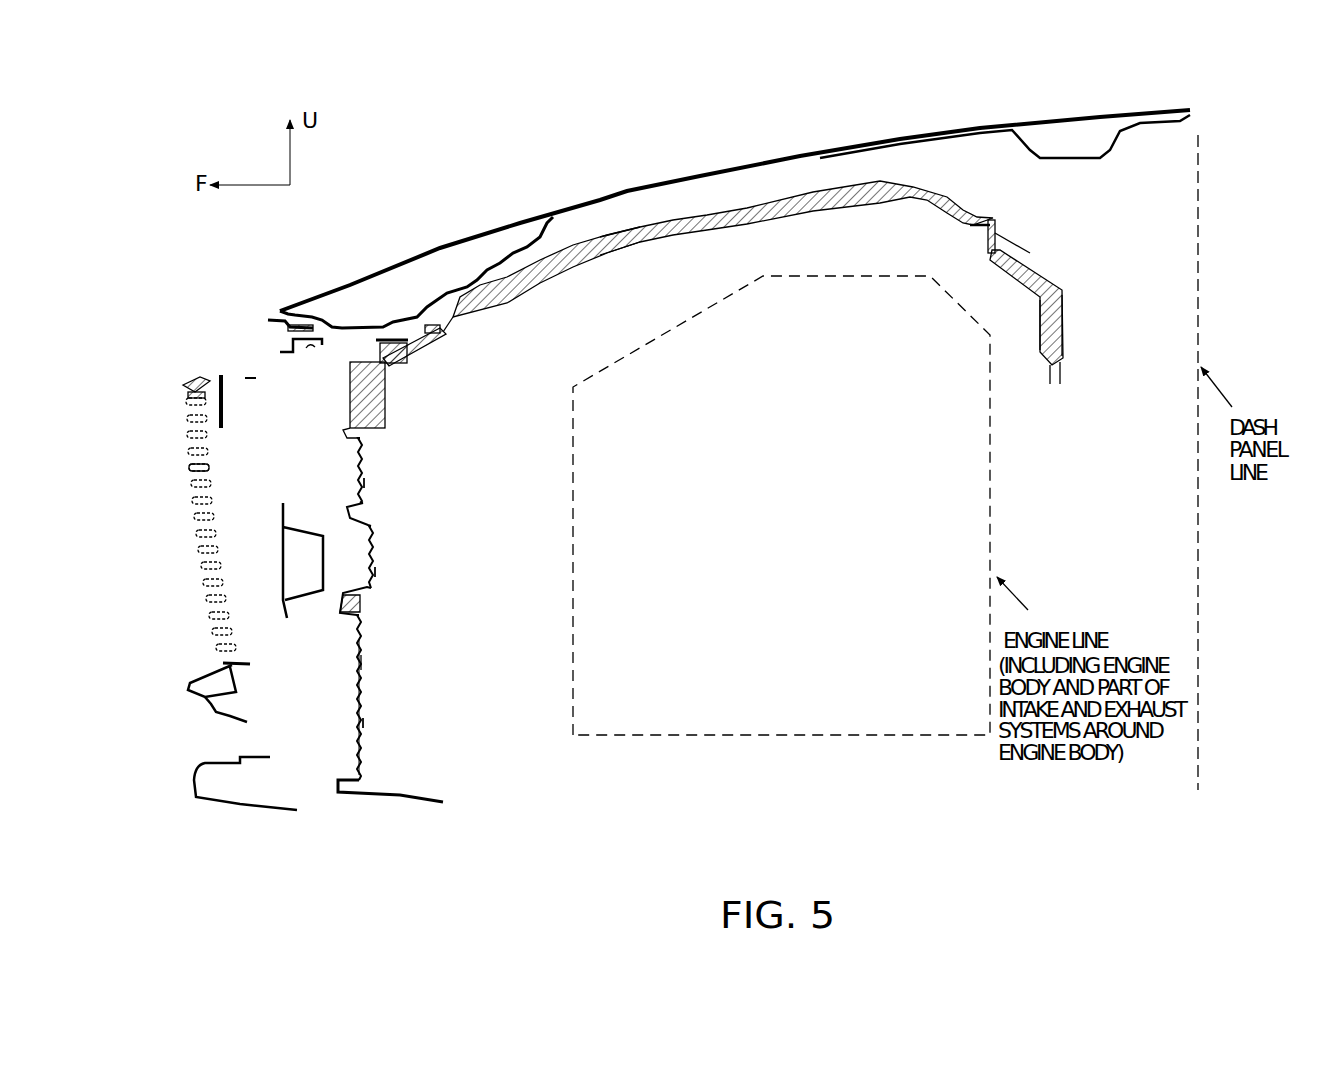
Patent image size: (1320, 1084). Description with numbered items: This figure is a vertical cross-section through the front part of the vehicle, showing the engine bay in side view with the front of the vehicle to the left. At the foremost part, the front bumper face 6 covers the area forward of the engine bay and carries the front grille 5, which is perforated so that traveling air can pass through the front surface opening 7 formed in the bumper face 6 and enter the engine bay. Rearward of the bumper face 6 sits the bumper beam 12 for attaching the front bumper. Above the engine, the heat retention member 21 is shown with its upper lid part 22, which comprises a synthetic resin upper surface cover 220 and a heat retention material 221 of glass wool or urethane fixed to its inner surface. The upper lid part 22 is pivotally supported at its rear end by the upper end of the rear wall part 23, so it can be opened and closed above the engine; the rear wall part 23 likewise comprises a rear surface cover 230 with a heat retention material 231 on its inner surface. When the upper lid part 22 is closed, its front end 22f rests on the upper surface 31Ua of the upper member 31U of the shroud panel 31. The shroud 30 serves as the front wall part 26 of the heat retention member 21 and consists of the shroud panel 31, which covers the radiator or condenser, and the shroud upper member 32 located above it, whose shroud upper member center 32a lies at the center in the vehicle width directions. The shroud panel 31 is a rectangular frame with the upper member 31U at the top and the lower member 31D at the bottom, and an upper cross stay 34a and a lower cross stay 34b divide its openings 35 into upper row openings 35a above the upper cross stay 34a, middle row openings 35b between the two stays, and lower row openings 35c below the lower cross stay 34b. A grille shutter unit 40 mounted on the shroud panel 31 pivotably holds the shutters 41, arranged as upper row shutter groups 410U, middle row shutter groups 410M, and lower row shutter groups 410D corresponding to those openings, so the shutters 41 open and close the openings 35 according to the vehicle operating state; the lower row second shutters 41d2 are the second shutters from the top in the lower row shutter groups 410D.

The front grille 5 is at (206, 470).
The front bumper face 6 is at (192, 380).
The front surface opening 7 is at (182, 446).
The bumper beam 12 is at (277, 530).
The heat retention member 21 is at (737, 180).
The upper lid part 22 is at (718, 235).
The front end of upper lid part 22f is at (425, 343).
The upper surface cover 220 is at (627, 230).
The heat retention material 221 is at (628, 250).
The rear wall part 23 is at (1059, 300).
The rear surface cover 230 is at (1066, 312).
The heat retention material 231 is at (1040, 320).
The front wall part 26 is at (420, 560).
The shroud 30 is at (508, 537).
The shroud panel 31 is at (420, 560).
The upper member 31U is at (385, 395).
The upper surface of upper member 31Ua is at (433, 330).
The lower member 31D is at (342, 792).
The shroud upper member 32 is at (300, 372).
The shroud upper member center 32a is at (327, 352).
The upper cross stay 34a is at (367, 518).
The lower cross stay 34b is at (372, 605).
The openings 35 is at (369, 603).
The upper row openings 35a is at (375, 483).
The middle row openings 35b is at (388, 572).
The lower row openings 35c is at (398, 723).
The grille shutter unit 40 is at (398, 604).
The upper row shutter groups 410U is at (372, 452).
The middle row shutter groups 410M is at (378, 543).
The lower row shutter groups 410D is at (395, 694).
The grille shutters 41 is at (412, 707).
The lower row second shutters 41d2 is at (362, 663).